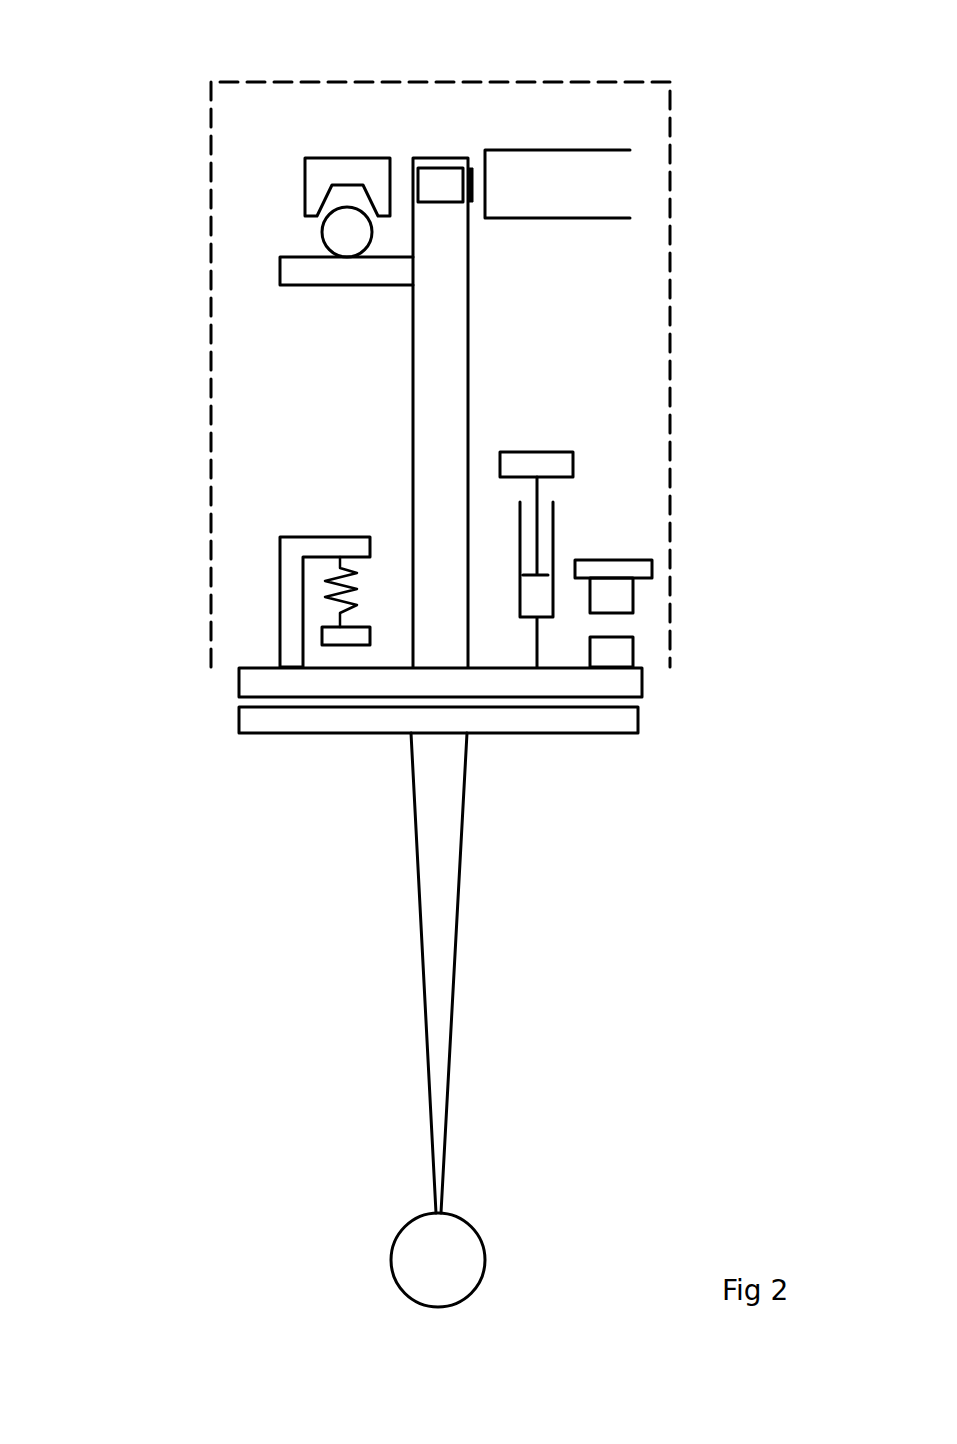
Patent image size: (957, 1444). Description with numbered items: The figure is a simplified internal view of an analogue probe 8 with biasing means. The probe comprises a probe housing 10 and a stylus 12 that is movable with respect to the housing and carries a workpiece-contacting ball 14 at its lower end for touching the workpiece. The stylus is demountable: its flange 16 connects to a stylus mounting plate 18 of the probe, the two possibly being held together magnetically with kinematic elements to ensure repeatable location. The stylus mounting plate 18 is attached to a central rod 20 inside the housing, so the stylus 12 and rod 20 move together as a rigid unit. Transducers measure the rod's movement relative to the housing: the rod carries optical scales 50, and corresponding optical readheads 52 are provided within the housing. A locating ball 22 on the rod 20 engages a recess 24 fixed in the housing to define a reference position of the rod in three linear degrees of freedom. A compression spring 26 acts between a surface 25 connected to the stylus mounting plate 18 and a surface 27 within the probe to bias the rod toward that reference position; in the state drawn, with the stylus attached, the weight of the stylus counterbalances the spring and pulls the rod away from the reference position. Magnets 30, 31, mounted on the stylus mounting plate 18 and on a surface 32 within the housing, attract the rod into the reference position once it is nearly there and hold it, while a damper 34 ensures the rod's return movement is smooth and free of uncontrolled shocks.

The analogue probe 8 is at (717, 250).
The probe housing 10 is at (207, 342).
The stylus 12 is at (447, 867).
The workpiece-contacting ball 14 is at (458, 1237).
The flange 16 is at (280, 720).
The stylus mounting plate 18 is at (262, 682).
The central rod 20 is at (452, 367).
The ball 22 is at (340, 228).
The recess 24 is at (315, 173).
The surface 25 is at (345, 545).
The spring 26 is at (322, 587).
The surface 27 is at (338, 635).
The magnet 30 is at (627, 603).
The magnet 31 is at (633, 657).
The surface 32 is at (643, 568).
The damper 34 is at (558, 512).
The optical scales 50 is at (440, 178).
The optical readheads 52 is at (578, 168).